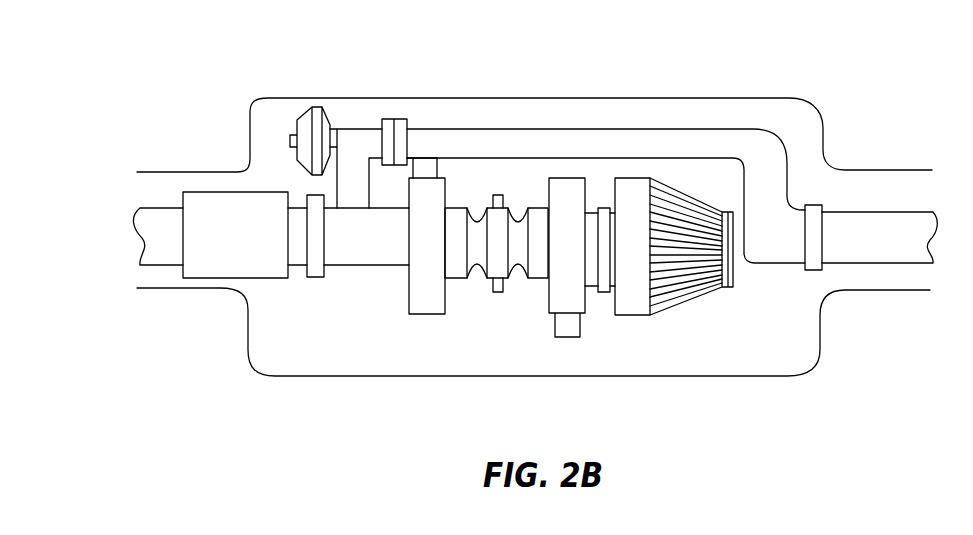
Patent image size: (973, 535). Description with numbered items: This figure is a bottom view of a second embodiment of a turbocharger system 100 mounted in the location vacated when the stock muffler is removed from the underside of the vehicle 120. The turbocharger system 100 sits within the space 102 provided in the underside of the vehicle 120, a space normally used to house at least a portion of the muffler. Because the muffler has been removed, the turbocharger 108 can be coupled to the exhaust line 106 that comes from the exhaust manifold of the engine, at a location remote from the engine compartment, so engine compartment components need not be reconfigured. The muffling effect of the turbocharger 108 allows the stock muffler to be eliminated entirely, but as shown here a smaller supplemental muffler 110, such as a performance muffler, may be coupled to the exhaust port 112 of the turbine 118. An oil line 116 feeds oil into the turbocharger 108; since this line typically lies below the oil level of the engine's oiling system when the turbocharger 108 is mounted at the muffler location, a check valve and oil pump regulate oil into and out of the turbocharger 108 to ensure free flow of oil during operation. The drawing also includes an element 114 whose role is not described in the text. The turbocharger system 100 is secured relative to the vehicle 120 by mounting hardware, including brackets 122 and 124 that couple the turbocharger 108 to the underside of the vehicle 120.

The turbocharger system 100 is at (833, 148).
The space 102 is at (800, 342).
The exhaust line 106 is at (880, 223).
The turbocharger 108 is at (487, 275).
The supplemental muffler 110 is at (215, 192).
The exhaust port 112 is at (397, 268).
The support bracket 114 is at (447, 192).
The oil line 116 is at (503, 207).
The turbine 118 is at (412, 313).
The vehicle 120 is at (750, 355).
The bracket 122 is at (602, 298).
The bracket 124 is at (317, 278).